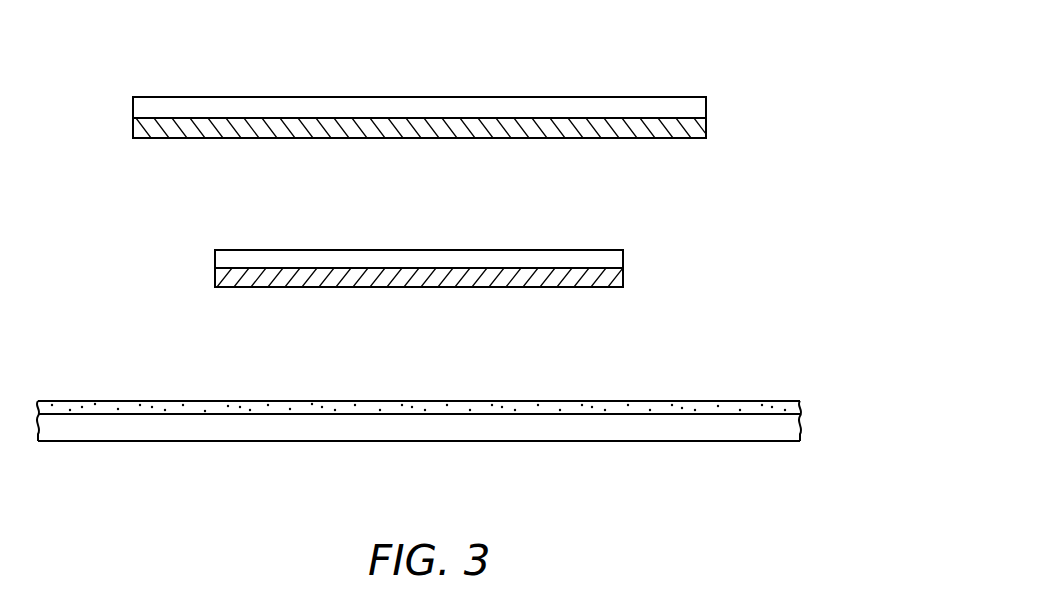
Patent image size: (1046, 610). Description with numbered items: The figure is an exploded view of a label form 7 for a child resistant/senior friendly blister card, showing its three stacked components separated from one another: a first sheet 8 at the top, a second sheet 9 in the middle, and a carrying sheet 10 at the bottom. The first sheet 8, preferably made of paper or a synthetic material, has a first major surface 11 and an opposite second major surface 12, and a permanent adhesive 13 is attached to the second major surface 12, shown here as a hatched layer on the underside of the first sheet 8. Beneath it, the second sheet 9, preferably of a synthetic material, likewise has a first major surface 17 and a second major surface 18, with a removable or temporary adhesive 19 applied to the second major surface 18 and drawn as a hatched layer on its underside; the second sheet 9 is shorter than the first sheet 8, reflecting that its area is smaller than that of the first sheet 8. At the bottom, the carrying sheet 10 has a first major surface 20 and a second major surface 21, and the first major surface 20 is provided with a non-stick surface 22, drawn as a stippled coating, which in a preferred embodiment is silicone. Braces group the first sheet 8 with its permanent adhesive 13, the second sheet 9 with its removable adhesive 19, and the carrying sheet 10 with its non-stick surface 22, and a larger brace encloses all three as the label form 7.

The label form 7 is at (895, 73).
The first sheet 8 is at (439, 112).
The second sheet 9 is at (418, 253).
The carrying sheet 10 is at (456, 427).
The first major surface of the first sheet 11 is at (165, 97).
The second major surface of the first sheet 12 is at (385, 117).
The permanent adhesive 13 is at (155, 128).
The first major surface of the second sheet 17 is at (280, 250).
The second major surface of the second sheet 18 is at (500, 267).
The removable adhesive 19 is at (215, 277).
The first major surface of the carrying sheet 20 is at (178, 414).
The second major surface of the carrying sheet 21 is at (332, 441).
The non-stick surface 22 is at (718, 401).